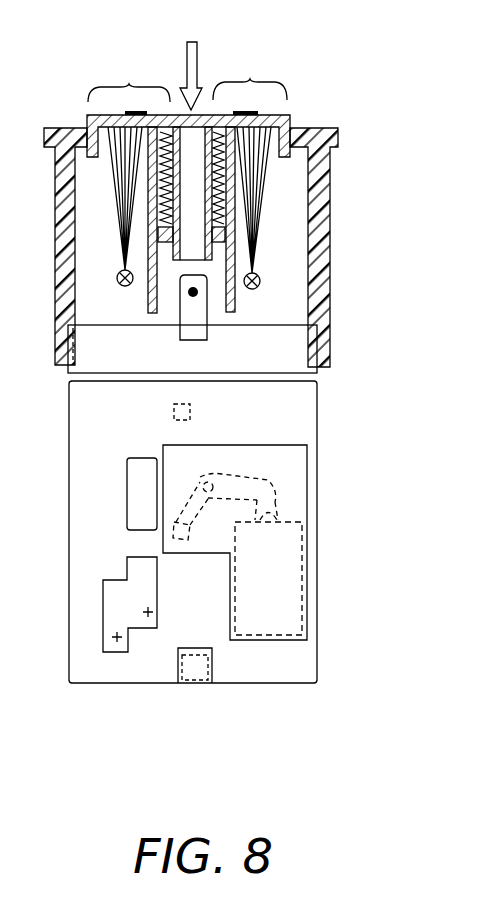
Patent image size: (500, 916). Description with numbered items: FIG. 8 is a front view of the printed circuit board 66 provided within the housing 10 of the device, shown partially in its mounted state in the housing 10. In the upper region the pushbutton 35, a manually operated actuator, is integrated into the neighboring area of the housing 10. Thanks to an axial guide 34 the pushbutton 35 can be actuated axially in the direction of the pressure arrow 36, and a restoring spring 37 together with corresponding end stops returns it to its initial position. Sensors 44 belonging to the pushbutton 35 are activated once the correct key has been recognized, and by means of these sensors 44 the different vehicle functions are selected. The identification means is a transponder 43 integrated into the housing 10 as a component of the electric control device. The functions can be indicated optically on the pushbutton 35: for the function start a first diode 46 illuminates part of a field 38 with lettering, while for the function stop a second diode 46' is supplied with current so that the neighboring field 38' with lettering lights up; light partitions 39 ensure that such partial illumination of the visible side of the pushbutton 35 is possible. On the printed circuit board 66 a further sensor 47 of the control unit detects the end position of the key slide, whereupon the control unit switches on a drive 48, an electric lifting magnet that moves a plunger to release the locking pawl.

The housing 10 is at (342, 155).
The axial guide 34 is at (233, 242).
The pushbutton 35 is at (289, 98).
The pressure arrow 36 is at (186, 52).
The restoring spring 37 is at (233, 207).
The field with lettering 38 is at (127, 148).
The neighboring field with lettering 38' is at (257, 146).
The light partitions 39 is at (148, 290).
The transponder 43 is at (238, 357).
The sensors 44 is at (193, 322).
The first diode 46 is at (67, 279).
The second diode 46' is at (320, 274).
The further sensor 47 is at (148, 614).
The drive 48 is at (277, 567).
The printed circuit board 66 is at (232, 420).